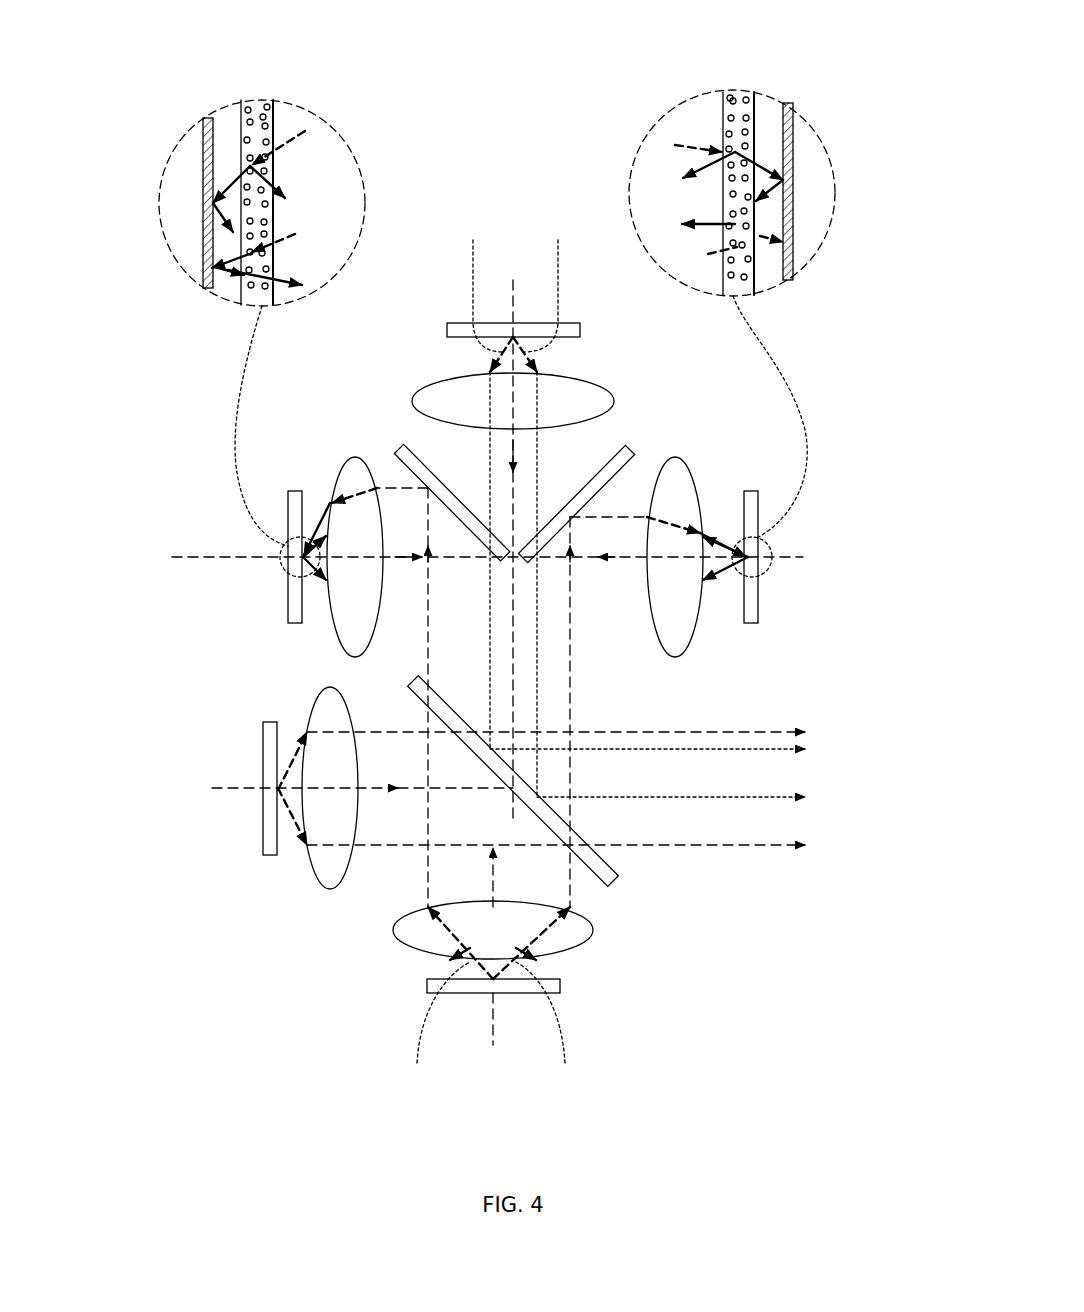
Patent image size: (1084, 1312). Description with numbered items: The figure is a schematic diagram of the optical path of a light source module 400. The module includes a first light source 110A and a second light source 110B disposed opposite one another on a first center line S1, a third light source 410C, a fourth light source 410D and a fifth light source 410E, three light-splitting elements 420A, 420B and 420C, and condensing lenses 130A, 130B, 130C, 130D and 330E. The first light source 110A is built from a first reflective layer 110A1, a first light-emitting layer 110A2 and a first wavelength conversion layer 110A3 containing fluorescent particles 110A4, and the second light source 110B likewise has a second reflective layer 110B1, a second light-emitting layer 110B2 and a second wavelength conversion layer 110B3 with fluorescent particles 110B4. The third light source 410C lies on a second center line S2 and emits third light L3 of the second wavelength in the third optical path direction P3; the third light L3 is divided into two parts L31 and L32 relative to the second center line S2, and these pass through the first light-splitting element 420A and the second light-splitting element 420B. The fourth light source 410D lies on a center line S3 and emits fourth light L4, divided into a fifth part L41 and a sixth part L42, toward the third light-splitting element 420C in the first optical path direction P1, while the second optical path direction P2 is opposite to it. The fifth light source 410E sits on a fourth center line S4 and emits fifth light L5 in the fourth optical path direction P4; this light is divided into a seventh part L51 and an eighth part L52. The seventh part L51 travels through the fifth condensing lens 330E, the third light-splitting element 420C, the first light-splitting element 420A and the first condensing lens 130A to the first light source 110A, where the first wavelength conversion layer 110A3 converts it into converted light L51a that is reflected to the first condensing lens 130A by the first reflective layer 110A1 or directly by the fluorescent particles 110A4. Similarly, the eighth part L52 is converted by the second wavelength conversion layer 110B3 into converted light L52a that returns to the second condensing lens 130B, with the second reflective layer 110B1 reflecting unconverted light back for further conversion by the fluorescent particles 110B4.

The light source module 400 is at (455, 82).
The first light source 110A is at (288, 618).
The first reflective layer 110A1 is at (208, 292).
The first light-emitting layer 110A2 is at (229, 290).
The first wavelength conversion layer 110A3 is at (257, 300).
The fluorescent particles 110A4 is at (262, 114).
The second light source 110B is at (758, 603).
The second reflective layer 110B1 is at (789, 283).
The second light-emitting layer 110B2 is at (767, 276).
The second wavelength conversion layer 110B3 is at (745, 292).
The fluorescent particles 110B4 is at (732, 98).
The seventh part L51 is at (300, 146).
The converted light L51a is at (218, 193).
The eighth part L52 is at (695, 148).
The converted light L52a is at (800, 573).
The third light source 410C is at (462, 323).
The third condensing lens 130C is at (443, 380).
The third light L3 is at (577, 218).
The part of the third light L31 is at (681, 512).
The part of the third light L32 is at (655, 489).
The second center line S2 is at (513, 537).
The third optical path direction P3 is at (515, 452).
The first light-splitting element 420A is at (400, 446).
The second light-splitting element 420B is at (630, 448).
The first condensing lens 130A is at (355, 457).
The second condensing lens 130B is at (675, 457).
The first center line S1 is at (470, 557).
The first optical path direction P1 is at (380, 697).
The second optical path direction P2 is at (635, 712).
The fourth light L4 is at (190, 693).
The fifth part L41 is at (292, 748).
The sixth part L42 is at (293, 808).
The center line S3 is at (346, 788).
The fourth light source 410D is at (263, 838).
The fourth condensing lens 130D is at (328, 890).
The third light-splitting element 420C is at (612, 875).
The fourth optical path direction P4 is at (475, 877).
The fifth condensing lens 330E is at (593, 930).
The fifth light source 410E is at (560, 987).
The fourth center line S4 is at (493, 1031).
The fifth light L5 is at (388, 1090).